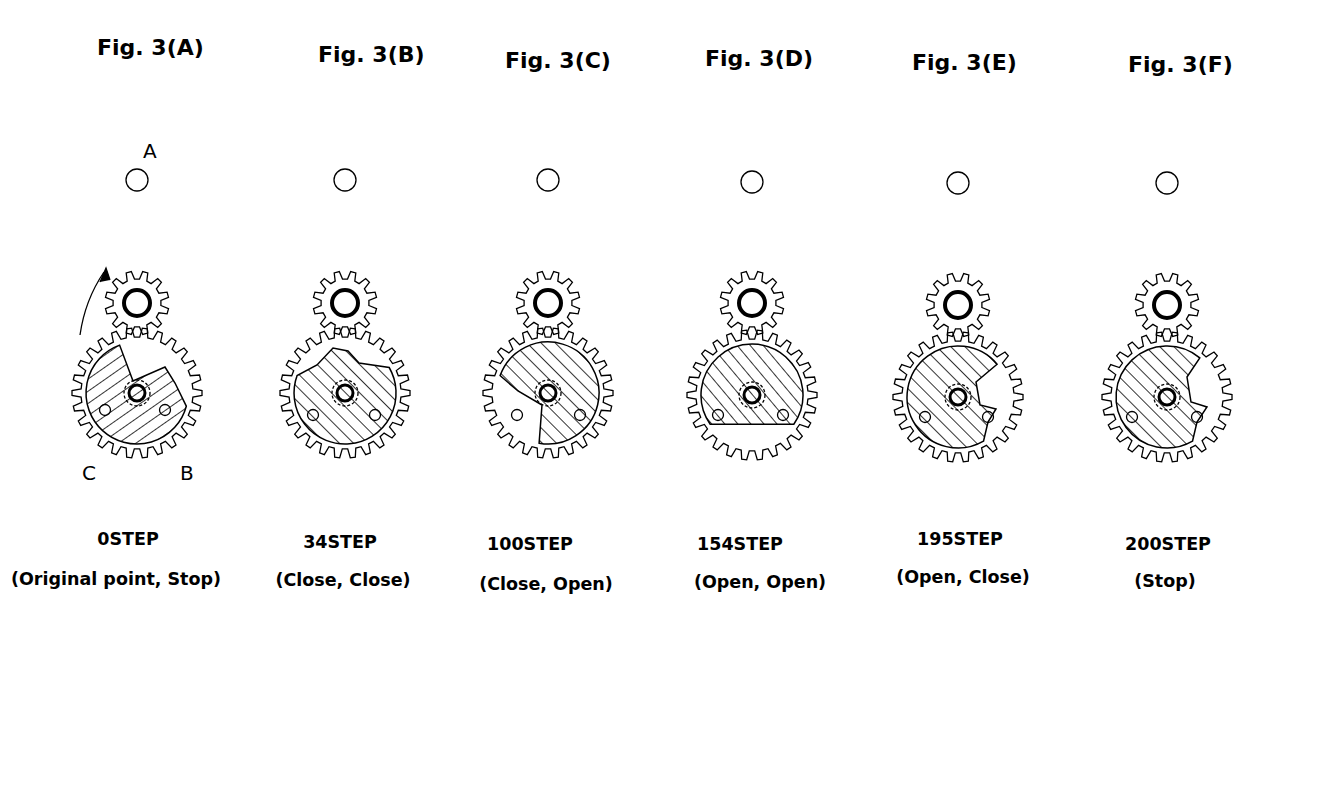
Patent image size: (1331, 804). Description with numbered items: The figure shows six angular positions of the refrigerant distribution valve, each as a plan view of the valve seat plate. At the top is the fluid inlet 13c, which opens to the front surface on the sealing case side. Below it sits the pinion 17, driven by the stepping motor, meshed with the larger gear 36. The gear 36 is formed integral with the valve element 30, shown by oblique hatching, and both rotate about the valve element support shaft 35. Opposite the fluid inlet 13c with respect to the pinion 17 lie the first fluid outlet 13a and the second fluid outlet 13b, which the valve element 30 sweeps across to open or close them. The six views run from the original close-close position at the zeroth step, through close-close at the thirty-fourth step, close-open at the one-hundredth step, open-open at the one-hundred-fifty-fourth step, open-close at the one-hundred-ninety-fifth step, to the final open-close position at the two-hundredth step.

In FIG. 3A, the first fluid outlet 13a is at (170, 418).
In FIG. 3B, the first fluid outlet 13a is at (380, 428).
In FIG. 3C, the first fluid outlet 13a is at (590, 420).
In FIG. 3D, the first fluid outlet 13a is at (790, 418).
In FIG. 3E, the first fluid outlet 13a is at (995, 420).
In FIG. 3F, the first fluid outlet 13a is at (1205, 420).
In FIG. 3A, the second fluid outlet 13b is at (103, 414).
In FIG. 3B, the second fluid outlet 13b is at (310, 428).
In FIG. 3C, the second fluid outlet 13b is at (515, 418).
In FIG. 3D, the second fluid outlet 13b is at (716, 420).
In FIG. 3E, the second fluid outlet 13b is at (922, 422).
In FIG. 3F, the second fluid outlet 13b is at (1130, 422).
In FIG. 3A, the fluid inlet 13c is at (146, 188).
In FIG. 3B, the fluid inlet 13c is at (353, 172).
In FIG. 3C, the fluid inlet 13c is at (556, 172).
In FIG. 3D, the fluid inlet 13c is at (760, 174).
In FIG. 3E, the fluid inlet 13c is at (966, 175).
In FIG. 3F, the fluid inlet 13c is at (1175, 175).
In FIG. 3A, the pinion 17 is at (165, 285).
In FIG. 3B, the pinion 17 is at (370, 290).
In FIG. 3C, the pinion 17 is at (575, 290).
In FIG. 3D, the pinion 17 is at (778, 290).
In FIG. 3E, the pinion 17 is at (985, 292).
In FIG. 3F, the pinion 17 is at (1195, 292).
In FIG. 3A, the valve element 30 is at (95, 350).
In FIG. 3B, the valve element 30 is at (290, 405).
In FIG. 3C, the valve element 30 is at (598, 395).
In FIG. 3D, the valve element 30 is at (720, 348).
In FIG. 3E, the valve element 30 is at (915, 350).
In FIG. 3F, the valve element 30 is at (1105, 390).
In FIG. 3A, the valve element support shaft 35 is at (150, 388).
In FIG. 3B, the valve element support shaft 35 is at (360, 380).
In FIG. 3C, the valve element support shaft 35 is at (530, 393).
In FIG. 3D, the valve element support shaft 35 is at (705, 392).
In FIG. 3E, the valve element support shaft 35 is at (920, 395).
In FIG. 3F, the valve element support shaft 35 is at (1150, 375).
In FIG. 3A, the gear 36 is at (185, 348).
In FIG. 3B, the gear 36 is at (385, 350).
In FIG. 3C, the gear 36 is at (600, 358).
In FIG. 3D, the gear 36 is at (795, 352).
In FIG. 3E, the gear 36 is at (1010, 365).
In FIG. 3F, the gear 36 is at (1220, 362).